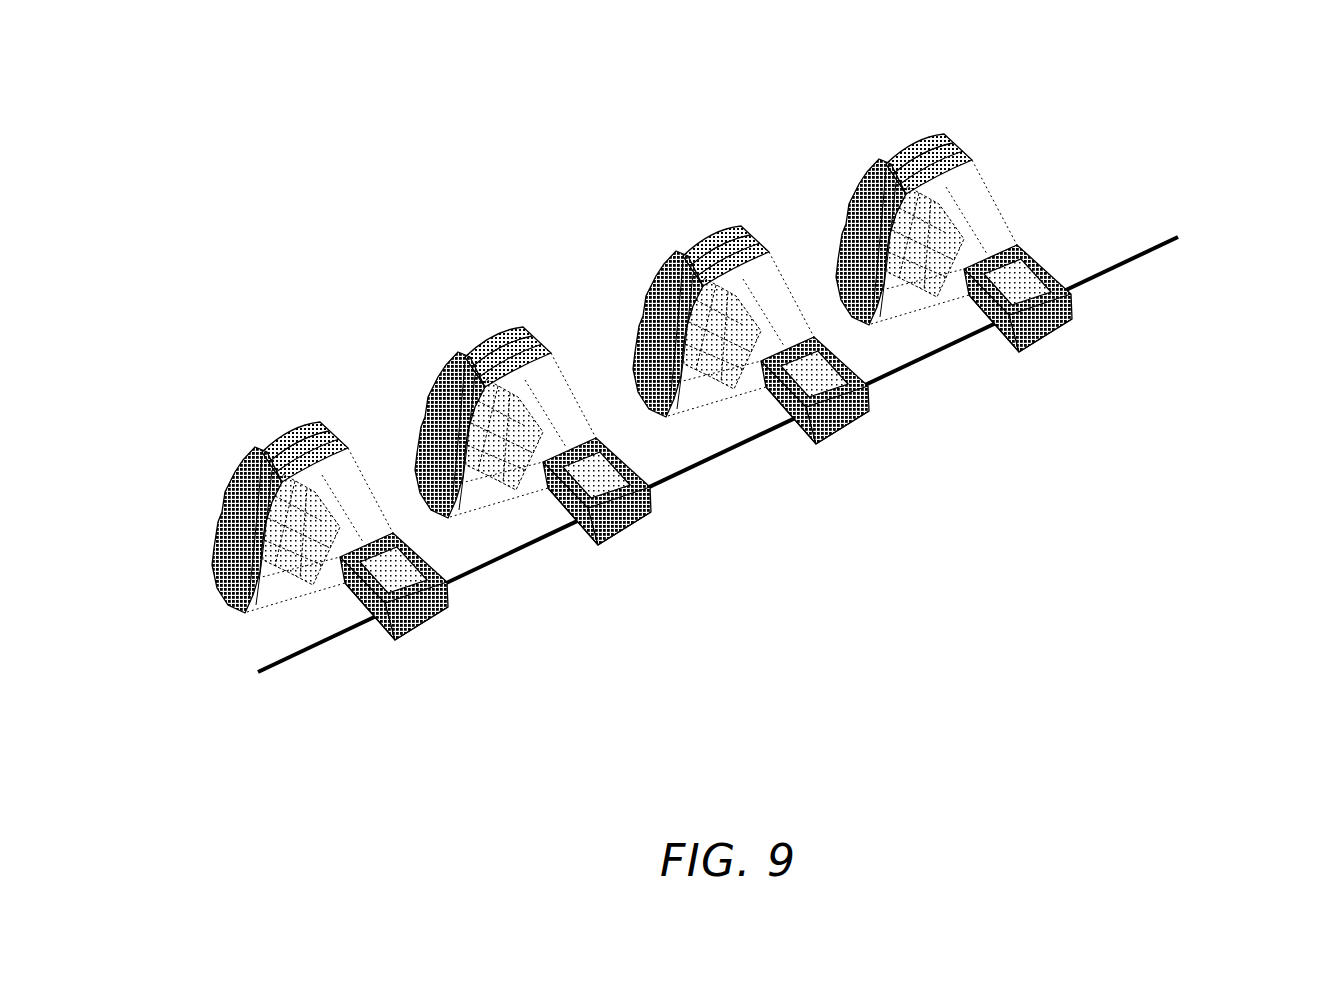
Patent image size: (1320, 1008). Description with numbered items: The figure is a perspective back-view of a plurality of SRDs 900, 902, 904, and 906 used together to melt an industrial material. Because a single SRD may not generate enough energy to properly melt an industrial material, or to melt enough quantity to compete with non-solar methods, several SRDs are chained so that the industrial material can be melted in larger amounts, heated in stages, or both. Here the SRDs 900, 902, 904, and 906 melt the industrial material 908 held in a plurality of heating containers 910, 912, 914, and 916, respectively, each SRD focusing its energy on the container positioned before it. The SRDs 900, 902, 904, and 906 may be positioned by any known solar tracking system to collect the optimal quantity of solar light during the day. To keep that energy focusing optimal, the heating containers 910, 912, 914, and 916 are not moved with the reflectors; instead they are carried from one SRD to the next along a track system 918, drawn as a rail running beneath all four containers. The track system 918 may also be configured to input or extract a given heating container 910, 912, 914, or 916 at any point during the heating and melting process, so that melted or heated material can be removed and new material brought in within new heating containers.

The SRD 900 is at (258, 448).
The SRD 902 is at (461, 353).
The SRD 904 is at (679, 252).
The SRD 906 is at (882, 160).
The industrial material 908 is at (450, 585).
The heating container 910 is at (405, 640).
The heating container 912 is at (613, 543).
The heating container 914 is at (850, 428).
The heating container 916 is at (1045, 345).
The track system 918 is at (1147, 258).